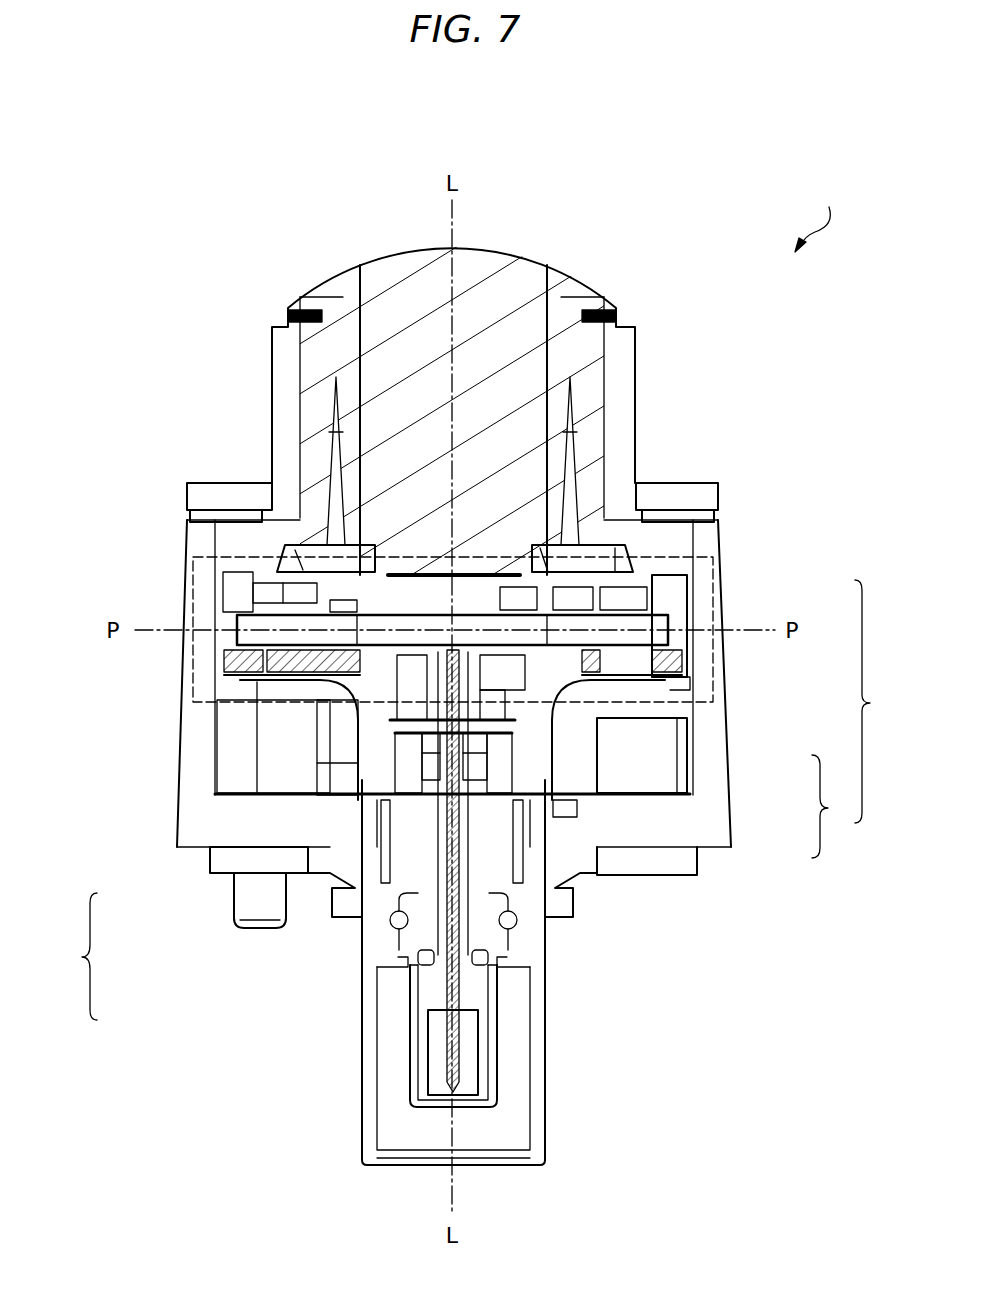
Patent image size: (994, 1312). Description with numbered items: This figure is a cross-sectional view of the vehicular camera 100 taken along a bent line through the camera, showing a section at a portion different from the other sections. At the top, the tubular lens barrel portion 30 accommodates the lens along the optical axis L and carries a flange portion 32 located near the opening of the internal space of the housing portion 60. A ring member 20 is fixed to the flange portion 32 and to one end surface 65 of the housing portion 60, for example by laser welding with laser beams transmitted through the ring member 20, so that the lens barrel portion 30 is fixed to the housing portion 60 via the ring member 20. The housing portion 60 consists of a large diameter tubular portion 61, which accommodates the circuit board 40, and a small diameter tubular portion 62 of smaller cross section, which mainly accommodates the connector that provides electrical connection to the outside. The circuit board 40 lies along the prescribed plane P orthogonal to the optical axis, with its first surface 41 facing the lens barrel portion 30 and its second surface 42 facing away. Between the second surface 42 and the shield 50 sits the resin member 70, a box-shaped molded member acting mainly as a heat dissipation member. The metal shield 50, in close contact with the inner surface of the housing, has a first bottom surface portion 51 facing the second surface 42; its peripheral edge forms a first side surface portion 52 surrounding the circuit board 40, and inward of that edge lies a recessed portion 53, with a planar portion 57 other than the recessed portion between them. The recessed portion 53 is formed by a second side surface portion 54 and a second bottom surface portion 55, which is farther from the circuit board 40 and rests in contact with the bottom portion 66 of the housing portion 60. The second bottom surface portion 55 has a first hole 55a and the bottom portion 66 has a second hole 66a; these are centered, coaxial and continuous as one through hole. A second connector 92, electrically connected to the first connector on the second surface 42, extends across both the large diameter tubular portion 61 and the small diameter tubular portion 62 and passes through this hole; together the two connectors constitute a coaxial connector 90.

The vehicular camera 100 is at (812, 204).
The lens barrel portion 30 is at (635, 380).
The ring member 20 is at (206, 480).
The flange portion 32 is at (195, 522).
The one end surface of the housing portion 65 is at (700, 531).
The shield 50 is at (228, 572).
The first surface 41 is at (655, 608).
The first side surface portion 52 is at (700, 608).
The circuit board 40 is at (243, 628).
The resin member 70 is at (238, 660).
The second surface 42 is at (690, 690).
The portion other than the recessed portion 57 is at (300, 690).
The first bottom surface portion 51 is at (878, 701).
The recessed portion 53 is at (834, 806).
The second side surface portion 54 is at (695, 780).
The second bottom surface portion 55 is at (548, 818).
The bottom portion 66 is at (240, 812).
The large diameter tubular portion 61 is at (178, 833).
The housing portion 60 is at (73, 956).
The small diameter tubular portion 62 is at (357, 1000).
The second hole 66a is at (578, 850).
The first hole 55a is at (648, 865).
The coaxial connector 90 is at (478, 992).
The second connector 92 is at (462, 1040).